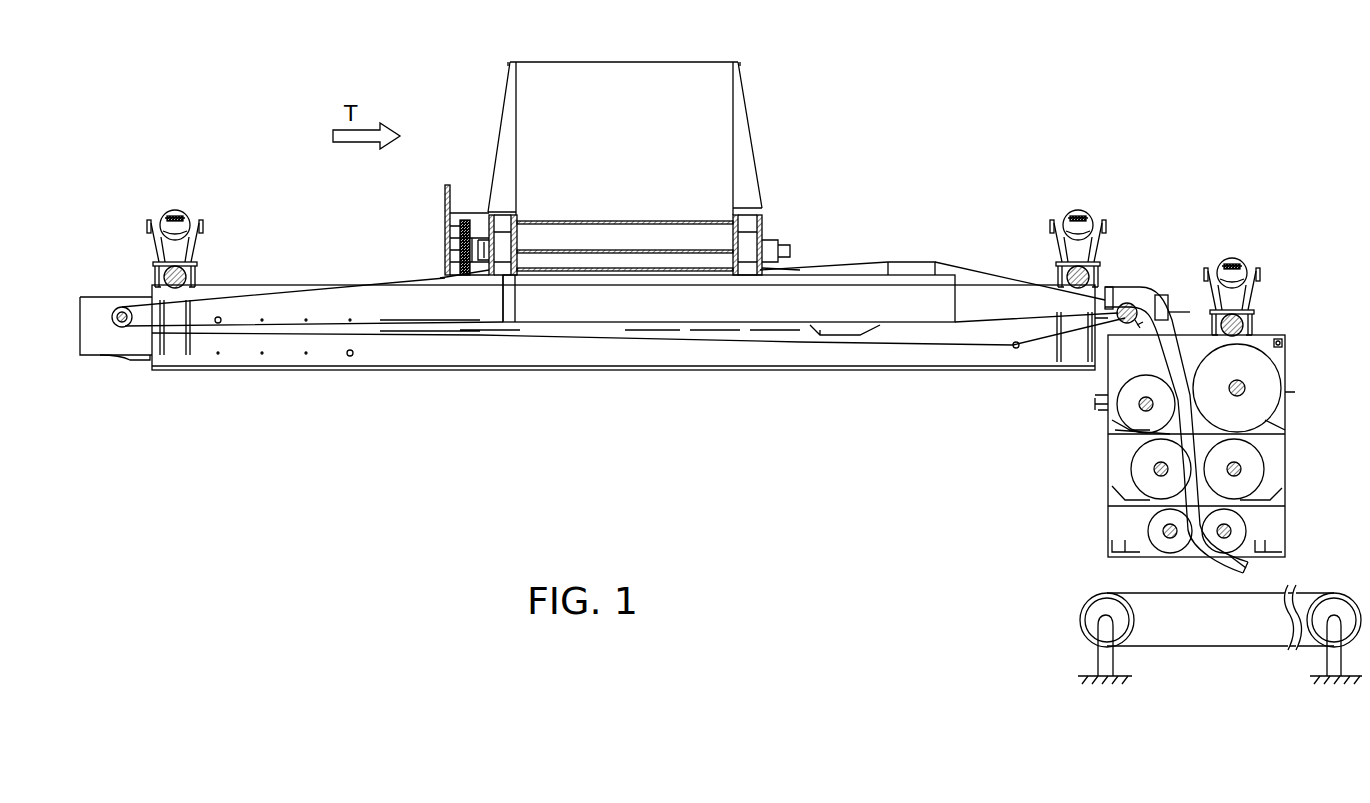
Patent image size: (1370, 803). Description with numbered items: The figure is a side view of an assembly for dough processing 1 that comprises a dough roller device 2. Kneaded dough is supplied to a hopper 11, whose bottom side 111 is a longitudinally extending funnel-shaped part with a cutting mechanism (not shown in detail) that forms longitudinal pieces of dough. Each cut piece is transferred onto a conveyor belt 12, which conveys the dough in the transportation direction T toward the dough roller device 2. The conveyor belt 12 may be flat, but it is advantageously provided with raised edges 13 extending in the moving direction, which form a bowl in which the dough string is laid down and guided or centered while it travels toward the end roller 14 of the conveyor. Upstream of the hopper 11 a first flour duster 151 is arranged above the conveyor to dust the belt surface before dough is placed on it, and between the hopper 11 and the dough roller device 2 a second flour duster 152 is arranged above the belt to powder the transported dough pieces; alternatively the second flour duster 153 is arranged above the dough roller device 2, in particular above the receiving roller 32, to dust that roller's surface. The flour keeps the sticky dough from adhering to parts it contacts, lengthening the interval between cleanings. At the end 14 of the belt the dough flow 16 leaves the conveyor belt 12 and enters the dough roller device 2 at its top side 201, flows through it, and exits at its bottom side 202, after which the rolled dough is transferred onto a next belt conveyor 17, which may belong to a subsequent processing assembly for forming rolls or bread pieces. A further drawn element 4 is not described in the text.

The assembly for dough processing 1 is at (765, 430).
The hopper 11 is at (712, 122).
The bottom side of the hopper 111 is at (552, 263).
The conveyor belt 12 is at (975, 285).
The raised edges of the belt 13 is at (833, 268).
The end roller of the conveyor 14 is at (1100, 322).
The first flour duster 151 is at (180, 215).
The second flour duster 152 is at (1082, 218).
The second flour duster 153 is at (1240, 268).
The dough flow 16 is at (1113, 303).
The nozzle 4 is at (1160, 300).
The top side 201 is at (1198, 345).
The bottom side 202 is at (1246, 568).
The dough roller device 2 is at (1302, 322).
The receiving roller 32 is at (1265, 375).
The next belt conveyor 17 is at (1257, 598).